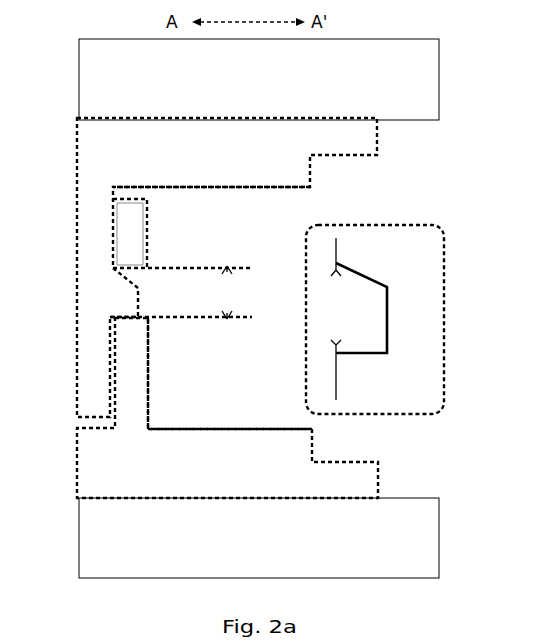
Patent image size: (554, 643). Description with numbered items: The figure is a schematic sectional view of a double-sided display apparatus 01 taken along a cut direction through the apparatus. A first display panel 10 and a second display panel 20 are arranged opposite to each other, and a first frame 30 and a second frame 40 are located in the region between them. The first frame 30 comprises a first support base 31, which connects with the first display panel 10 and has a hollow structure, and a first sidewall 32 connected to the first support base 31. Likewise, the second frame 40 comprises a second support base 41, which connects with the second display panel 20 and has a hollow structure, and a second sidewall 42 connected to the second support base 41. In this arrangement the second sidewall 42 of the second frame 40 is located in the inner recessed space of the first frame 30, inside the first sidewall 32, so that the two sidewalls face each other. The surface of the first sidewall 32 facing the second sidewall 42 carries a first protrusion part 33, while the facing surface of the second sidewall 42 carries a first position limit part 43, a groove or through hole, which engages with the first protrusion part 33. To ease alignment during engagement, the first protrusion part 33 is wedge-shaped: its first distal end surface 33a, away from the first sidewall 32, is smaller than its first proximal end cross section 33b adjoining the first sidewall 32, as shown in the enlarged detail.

The first display panel 10 is at (440, 78).
The second display panel 20 is at (440, 538).
The first frame 30 is at (76, 150).
The first support base 31 is at (222, 164).
The first sidewall 32 is at (95, 250).
The first protrusion part 33 is at (306, 337).
The first distal end surface 33a is at (387, 338).
The first proximal end cross section 33b is at (338, 319).
The second frame 40 is at (77, 462).
The second support base 41 is at (226, 456).
The second sidewall 42 is at (137, 365).
The first position limit part 43 is at (229, 292).
The double-sided display apparatus 01 is at (475, 318).